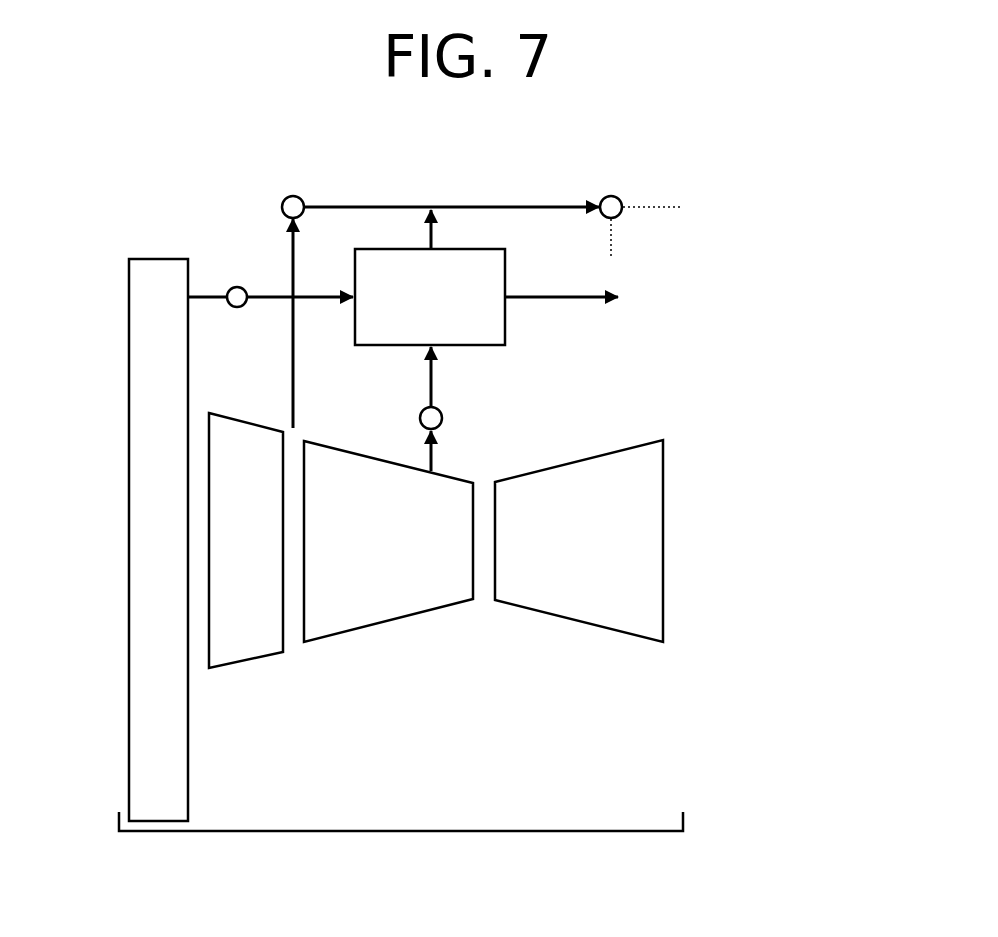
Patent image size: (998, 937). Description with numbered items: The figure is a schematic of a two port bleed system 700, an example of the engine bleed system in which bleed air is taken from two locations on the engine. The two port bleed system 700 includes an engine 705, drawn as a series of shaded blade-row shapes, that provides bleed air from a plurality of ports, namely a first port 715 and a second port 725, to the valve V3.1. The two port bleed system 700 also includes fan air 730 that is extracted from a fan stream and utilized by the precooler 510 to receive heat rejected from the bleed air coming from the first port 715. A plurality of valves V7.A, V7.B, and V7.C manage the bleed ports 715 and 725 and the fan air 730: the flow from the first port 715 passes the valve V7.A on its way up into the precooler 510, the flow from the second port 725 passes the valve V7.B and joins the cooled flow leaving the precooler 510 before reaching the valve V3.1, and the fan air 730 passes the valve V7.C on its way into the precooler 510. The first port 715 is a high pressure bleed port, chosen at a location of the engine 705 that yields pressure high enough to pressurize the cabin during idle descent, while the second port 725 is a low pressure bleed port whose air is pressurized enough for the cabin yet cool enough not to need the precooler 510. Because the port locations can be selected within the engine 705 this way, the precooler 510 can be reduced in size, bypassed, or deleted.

The two port bleed system 700 is at (962, 106).
The engine 705 is at (683, 831).
The fan air 730 is at (193, 288).
The second port 725 is at (278, 420).
The first port 715 is at (439, 469).
The precooler 510 is at (447, 310).
The valve V7.A is at (443, 415).
The valve V7.B is at (285, 199).
The valve V7.C is at (242, 308).
The valve V3.1 is at (603, 198).